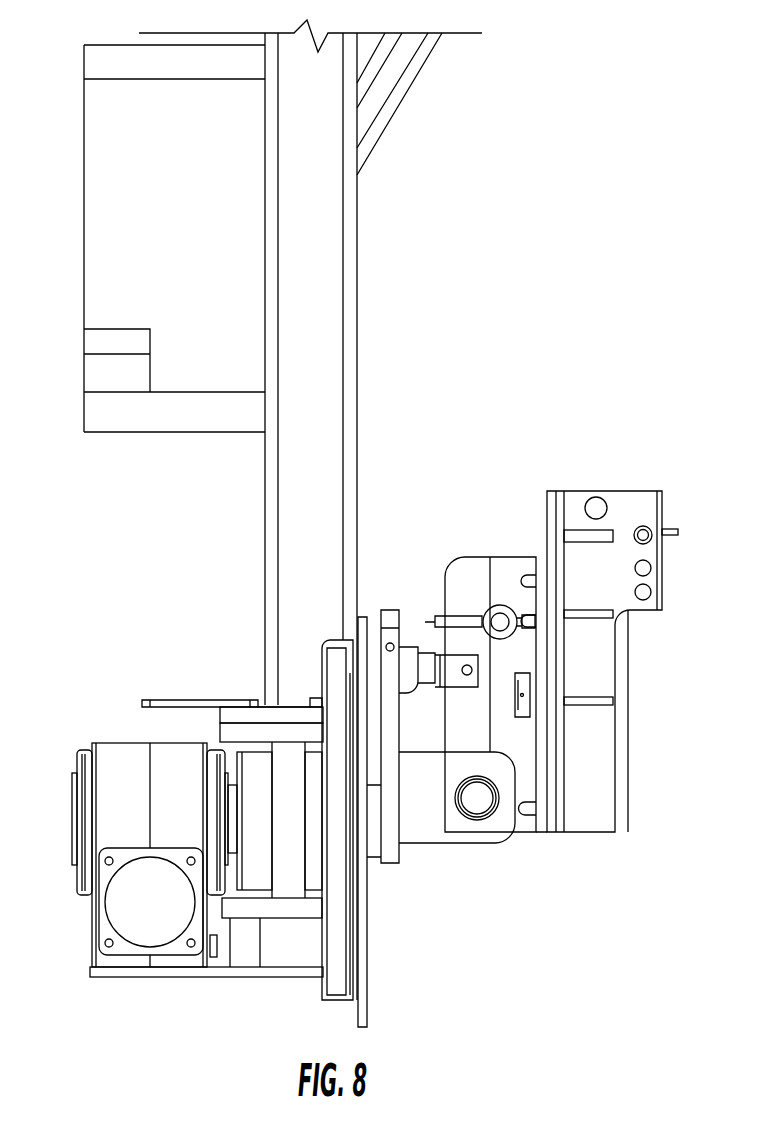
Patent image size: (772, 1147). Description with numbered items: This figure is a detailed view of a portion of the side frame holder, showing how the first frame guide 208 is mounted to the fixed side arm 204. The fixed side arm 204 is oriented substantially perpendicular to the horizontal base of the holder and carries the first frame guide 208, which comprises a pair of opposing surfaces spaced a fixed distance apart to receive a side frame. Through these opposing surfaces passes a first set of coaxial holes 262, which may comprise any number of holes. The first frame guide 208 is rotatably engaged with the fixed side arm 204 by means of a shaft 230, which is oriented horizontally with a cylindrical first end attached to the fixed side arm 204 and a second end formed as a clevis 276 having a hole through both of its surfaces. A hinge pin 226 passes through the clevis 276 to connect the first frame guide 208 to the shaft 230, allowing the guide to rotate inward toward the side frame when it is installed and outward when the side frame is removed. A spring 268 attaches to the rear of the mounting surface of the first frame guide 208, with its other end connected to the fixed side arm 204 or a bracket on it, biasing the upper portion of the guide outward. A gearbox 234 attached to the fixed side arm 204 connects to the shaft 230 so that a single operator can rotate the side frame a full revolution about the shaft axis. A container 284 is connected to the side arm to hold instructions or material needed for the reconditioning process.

The fixed side arm 204 is at (268, 527).
The container 284 is at (102, 393).
The gearbox 234 is at (115, 958).
The shaft 230 is at (375, 828).
The clevis 276 is at (428, 826).
The hinge pin 226 is at (482, 820).
The spring 268 is at (465, 615).
The first frame guide 208 is at (587, 818).
The coaxial holes 262 is at (663, 565).